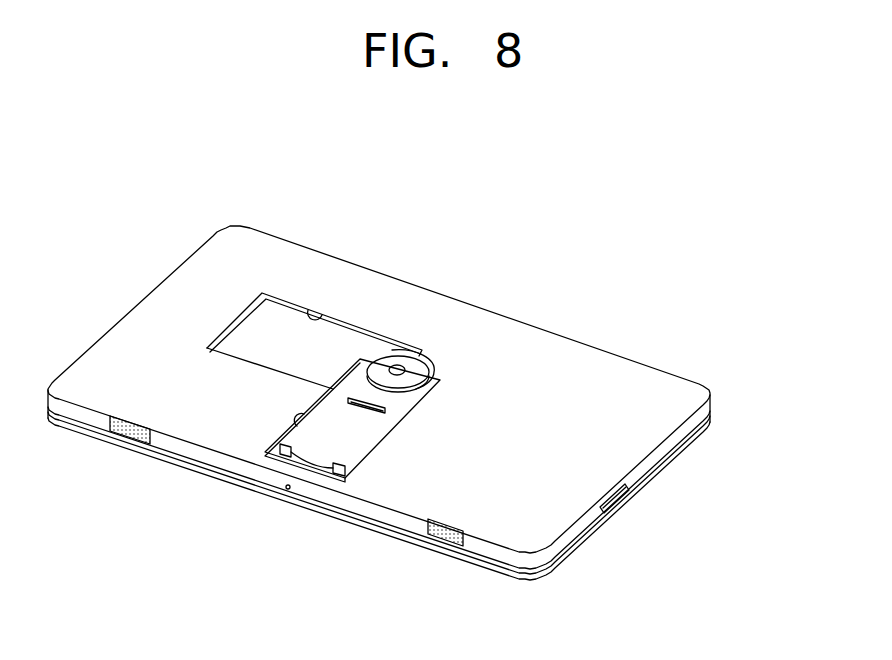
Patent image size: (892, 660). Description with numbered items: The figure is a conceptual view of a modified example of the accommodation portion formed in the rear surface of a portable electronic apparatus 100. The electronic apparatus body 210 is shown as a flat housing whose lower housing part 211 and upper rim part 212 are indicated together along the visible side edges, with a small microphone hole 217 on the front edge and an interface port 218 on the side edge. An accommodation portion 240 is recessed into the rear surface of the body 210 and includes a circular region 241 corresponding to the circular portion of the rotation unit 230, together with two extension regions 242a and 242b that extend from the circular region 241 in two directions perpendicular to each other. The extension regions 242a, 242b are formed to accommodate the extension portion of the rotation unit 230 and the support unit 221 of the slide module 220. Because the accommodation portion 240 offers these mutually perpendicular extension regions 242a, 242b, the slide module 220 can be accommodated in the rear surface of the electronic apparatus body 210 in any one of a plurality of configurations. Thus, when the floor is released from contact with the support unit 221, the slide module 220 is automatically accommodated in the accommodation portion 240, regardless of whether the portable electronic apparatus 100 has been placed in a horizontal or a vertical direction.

The mobile terminal 100 is at (448, 379).
The electronic apparatus body 210 is at (448, 472).
The front case 211 is at (422, 496).
The rear case 212 is at (704, 402).
The microphone hole 217 is at (287, 490).
The interface port 218 is at (633, 493).
The slide module 220 is at (409, 394).
The support unit 221 is at (368, 442).
The rotation unit 230 is at (378, 350).
The accommodation portion 240 is at (239, 300).
The circular region 241 is at (416, 362).
The extension region 242a is at (300, 418).
The extension region 242b is at (306, 310).